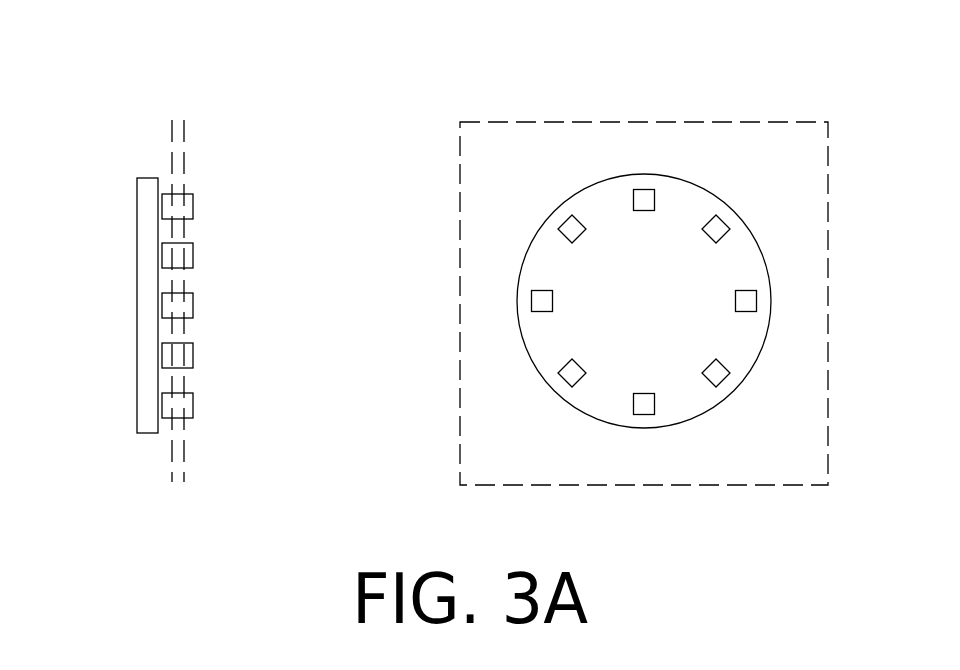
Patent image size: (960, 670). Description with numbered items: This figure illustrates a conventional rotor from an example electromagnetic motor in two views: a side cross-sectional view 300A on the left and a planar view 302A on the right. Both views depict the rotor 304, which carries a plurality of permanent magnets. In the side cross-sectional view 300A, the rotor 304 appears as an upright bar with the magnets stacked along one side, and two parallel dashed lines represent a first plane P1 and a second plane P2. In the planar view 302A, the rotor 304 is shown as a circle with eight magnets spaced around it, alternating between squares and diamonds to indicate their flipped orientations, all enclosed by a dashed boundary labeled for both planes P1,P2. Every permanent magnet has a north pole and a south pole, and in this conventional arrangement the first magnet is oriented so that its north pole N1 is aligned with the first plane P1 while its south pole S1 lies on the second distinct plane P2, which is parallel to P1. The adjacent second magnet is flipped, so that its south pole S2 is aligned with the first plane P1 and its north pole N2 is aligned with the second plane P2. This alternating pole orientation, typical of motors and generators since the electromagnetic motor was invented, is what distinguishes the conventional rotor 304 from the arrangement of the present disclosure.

The side cross-sectional view 300A is at (202, 38).
The planar view 302A is at (667, 66).
The rotor 304 is at (137, 395).
The first plane P1 is at (202, 299).
The second plane P2 is at (152, 299).
The first and second planes P1,P2 is at (755, 122).
The north pole of first magnet N1 is at (645, 200).
The north pole of second magnet N2 is at (149, 257).
The south pole of first magnet S1 is at (149, 208).
The south pole of second magnet S2 is at (570, 229).